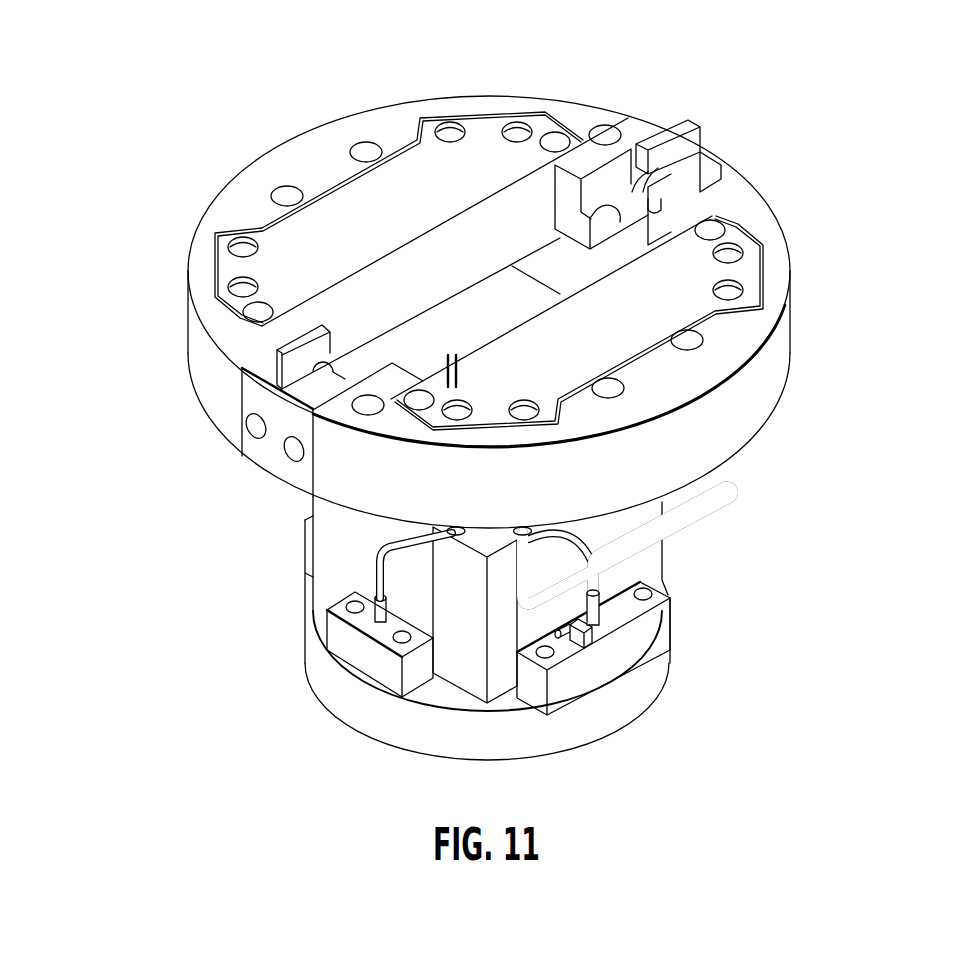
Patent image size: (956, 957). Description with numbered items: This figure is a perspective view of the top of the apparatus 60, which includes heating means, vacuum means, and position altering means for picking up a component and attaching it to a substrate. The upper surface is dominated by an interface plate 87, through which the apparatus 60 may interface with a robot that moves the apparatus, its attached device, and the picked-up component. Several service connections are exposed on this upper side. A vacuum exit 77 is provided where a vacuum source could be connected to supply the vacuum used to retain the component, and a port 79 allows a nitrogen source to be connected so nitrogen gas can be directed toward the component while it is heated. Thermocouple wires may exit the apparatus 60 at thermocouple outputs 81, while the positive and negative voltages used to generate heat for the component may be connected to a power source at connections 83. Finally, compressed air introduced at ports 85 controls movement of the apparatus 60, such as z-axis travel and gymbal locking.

The apparatus 60 is at (140, 190).
The vacuum exit 77 is at (610, 390).
The port 79 is at (688, 340).
The thermocouple outputs 81 is at (458, 372).
The connections 83 is at (731, 289).
The ports 85 is at (287, 196).
The interface plate 87 is at (516, 98).